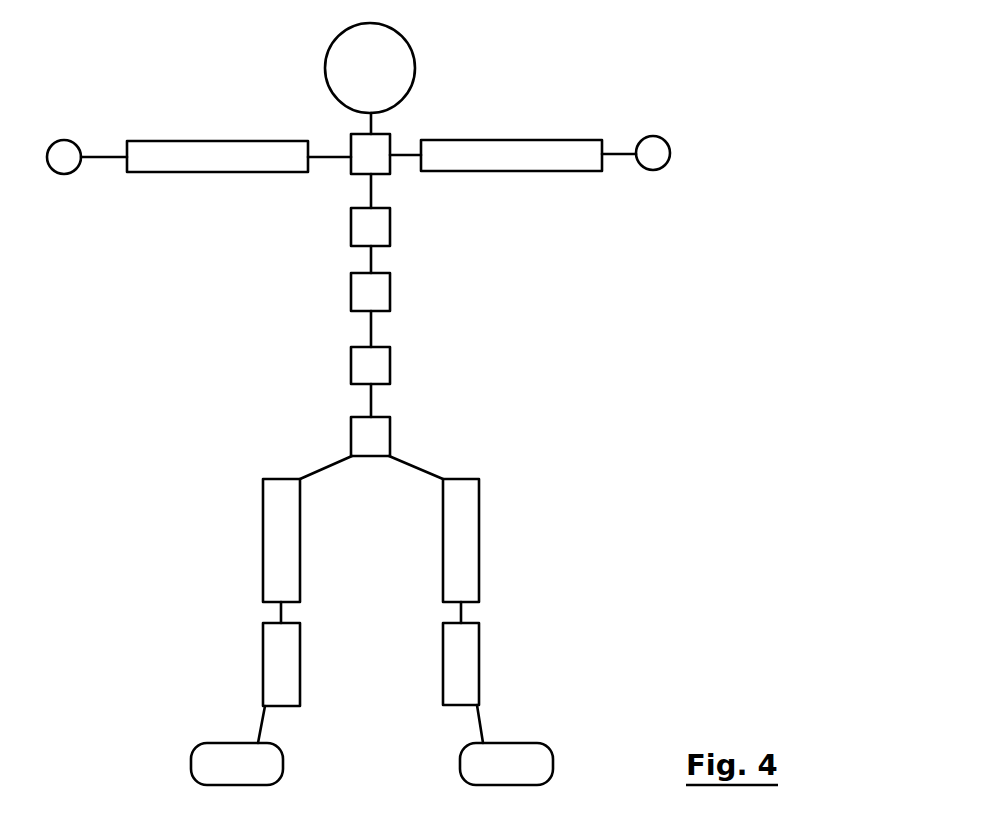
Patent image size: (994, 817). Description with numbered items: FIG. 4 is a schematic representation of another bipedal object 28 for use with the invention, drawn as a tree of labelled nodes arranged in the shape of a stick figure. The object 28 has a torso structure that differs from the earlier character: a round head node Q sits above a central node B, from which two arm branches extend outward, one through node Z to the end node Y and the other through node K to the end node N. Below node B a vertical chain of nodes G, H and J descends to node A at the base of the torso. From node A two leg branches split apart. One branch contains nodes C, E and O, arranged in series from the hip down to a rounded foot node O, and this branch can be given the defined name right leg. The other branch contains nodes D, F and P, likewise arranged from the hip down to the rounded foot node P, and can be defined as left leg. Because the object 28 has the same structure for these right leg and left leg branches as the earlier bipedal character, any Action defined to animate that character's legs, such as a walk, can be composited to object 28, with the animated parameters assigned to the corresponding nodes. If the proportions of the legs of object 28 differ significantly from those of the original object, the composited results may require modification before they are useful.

The bipedal object 28 is at (466, 404).
The head segment Q is at (370, 68).
The shoulder/upper torso segment B is at (370, 154).
The upper spine segment G is at (370, 227).
The middle spine segment H is at (370, 292).
The lower spine segment J is at (370, 365).
The pelvis segment A is at (370, 436).
The left hand Y is at (64, 157).
The left arm segment Z is at (217, 156).
The right arm segment K is at (511, 155).
The right hand N is at (653, 153).
The node C is at (281, 540).
The node E is at (281, 664).
The node O is at (237, 764).
The node D is at (461, 540).
The node F is at (461, 664).
The node P is at (506, 764).